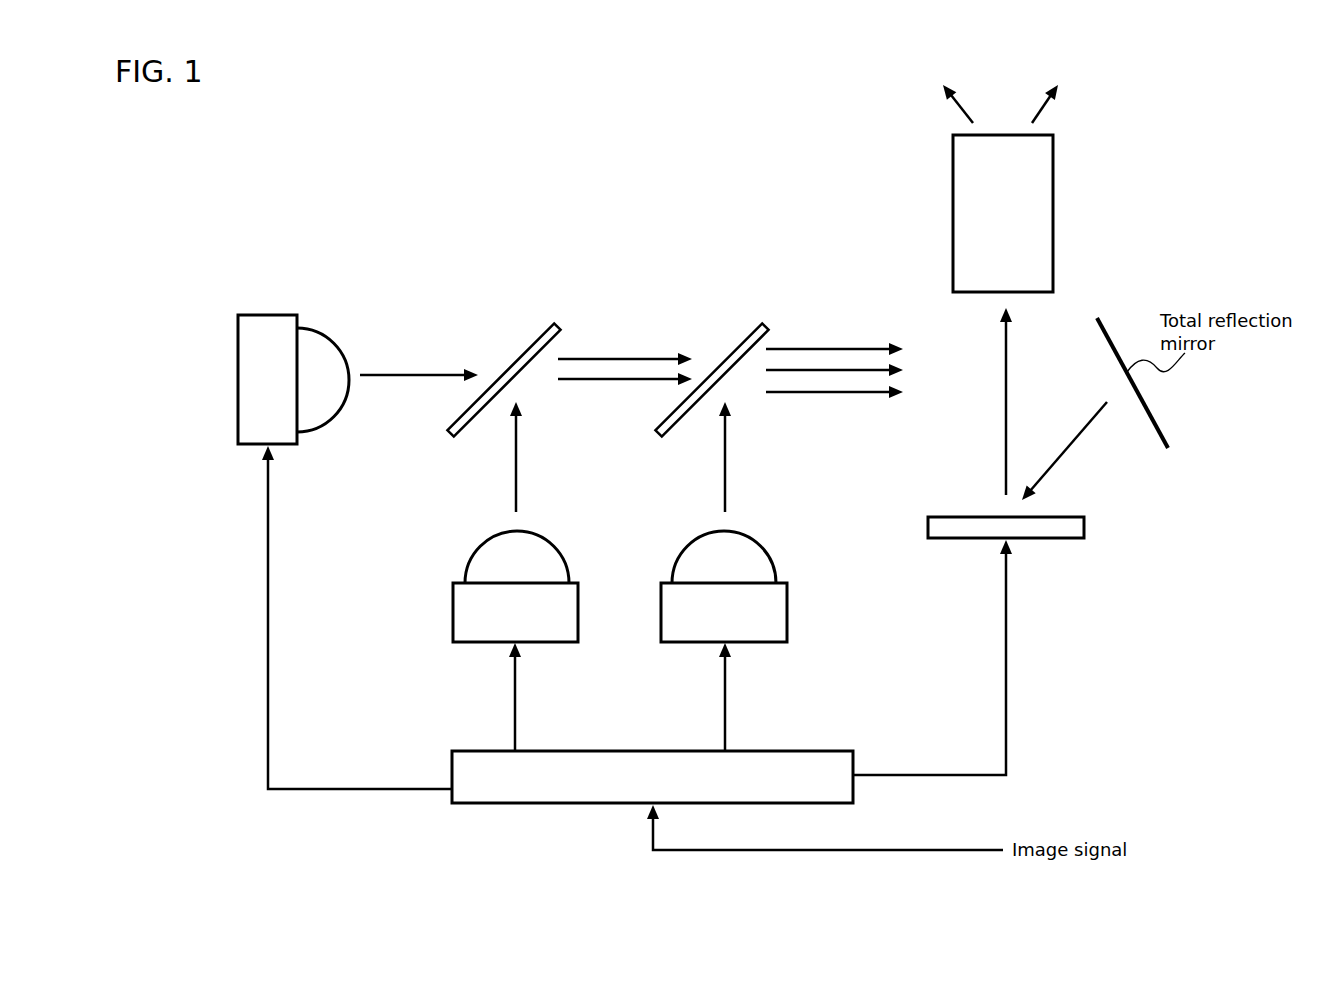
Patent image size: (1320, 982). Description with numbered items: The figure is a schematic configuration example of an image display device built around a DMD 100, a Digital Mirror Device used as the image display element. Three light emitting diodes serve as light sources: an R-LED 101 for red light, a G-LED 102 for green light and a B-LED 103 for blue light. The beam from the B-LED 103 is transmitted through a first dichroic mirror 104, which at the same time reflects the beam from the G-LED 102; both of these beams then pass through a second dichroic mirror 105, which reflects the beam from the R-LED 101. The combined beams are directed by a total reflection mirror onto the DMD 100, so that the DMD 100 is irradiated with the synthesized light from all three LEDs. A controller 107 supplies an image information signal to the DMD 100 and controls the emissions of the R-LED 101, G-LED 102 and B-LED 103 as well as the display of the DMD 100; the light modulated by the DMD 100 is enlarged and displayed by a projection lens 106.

The DMD 100 is at (1084, 522).
The R-LED 101 is at (787, 607).
The G-LED 102 is at (453, 612).
The B-LED 103 is at (238, 380).
The first dichroic mirror 104 is at (512, 360).
The second dichroic mirror 105 is at (722, 360).
The projection lens 106 is at (1053, 208).
The controller 107 is at (800, 750).